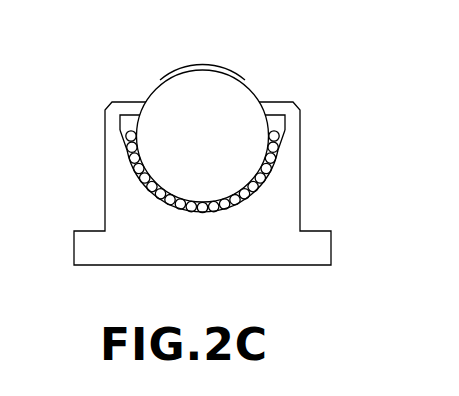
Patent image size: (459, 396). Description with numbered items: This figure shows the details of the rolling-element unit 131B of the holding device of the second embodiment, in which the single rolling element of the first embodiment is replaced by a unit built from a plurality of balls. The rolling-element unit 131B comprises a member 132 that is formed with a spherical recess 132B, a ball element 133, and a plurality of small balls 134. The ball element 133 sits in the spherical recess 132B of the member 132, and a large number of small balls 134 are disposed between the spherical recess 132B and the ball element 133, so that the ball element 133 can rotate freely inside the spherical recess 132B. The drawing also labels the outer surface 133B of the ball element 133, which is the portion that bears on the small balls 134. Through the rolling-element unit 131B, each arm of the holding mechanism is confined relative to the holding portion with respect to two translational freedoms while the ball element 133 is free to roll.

The rolling-element unit 131B is at (104, 79).
The member 132 is at (118, 253).
The spherical recess 132B is at (268, 170).
The ball element 133 is at (205, 82).
The outer surface of main ball 133B is at (238, 78).
The small balls 134 is at (282, 138).